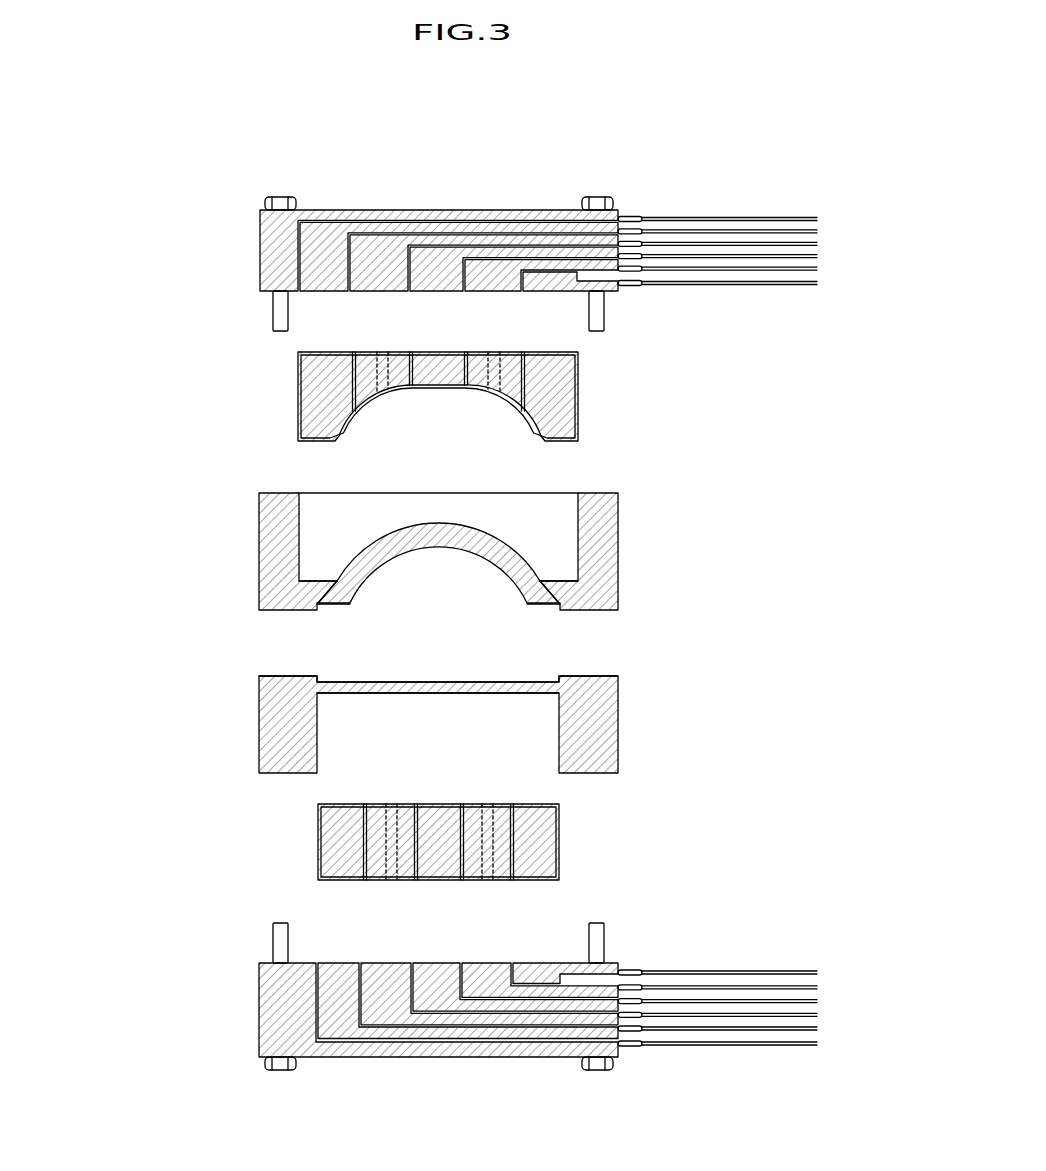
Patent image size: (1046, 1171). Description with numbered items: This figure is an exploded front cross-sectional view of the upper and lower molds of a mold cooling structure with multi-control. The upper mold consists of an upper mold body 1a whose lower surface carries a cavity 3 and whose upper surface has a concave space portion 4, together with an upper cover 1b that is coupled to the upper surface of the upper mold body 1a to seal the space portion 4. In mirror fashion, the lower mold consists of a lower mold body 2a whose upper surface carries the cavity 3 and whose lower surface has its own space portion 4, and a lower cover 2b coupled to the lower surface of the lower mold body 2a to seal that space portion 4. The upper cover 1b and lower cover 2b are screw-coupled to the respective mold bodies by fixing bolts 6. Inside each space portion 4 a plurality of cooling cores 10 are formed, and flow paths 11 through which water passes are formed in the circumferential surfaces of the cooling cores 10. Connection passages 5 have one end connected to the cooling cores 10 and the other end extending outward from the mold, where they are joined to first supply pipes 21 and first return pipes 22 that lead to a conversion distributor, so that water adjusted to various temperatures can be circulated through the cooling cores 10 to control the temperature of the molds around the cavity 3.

The upper mold body 1a is at (258, 550).
The upper cover 1b is at (258, 247).
The lower mold body 2a is at (258, 723).
The lower cover 2b is at (258, 1005).
The cavity 3 is at (360, 590).
The space portion 4 is at (323, 580).
The connection passage 5 is at (405, 227).
The fixing bolt 6 is at (280, 198).
The cooling core 10 is at (367, 352).
The flow path 11 is at (587, 382).
The first supply pipe 21 is at (722, 210).
The first return pipe 22 is at (768, 286).